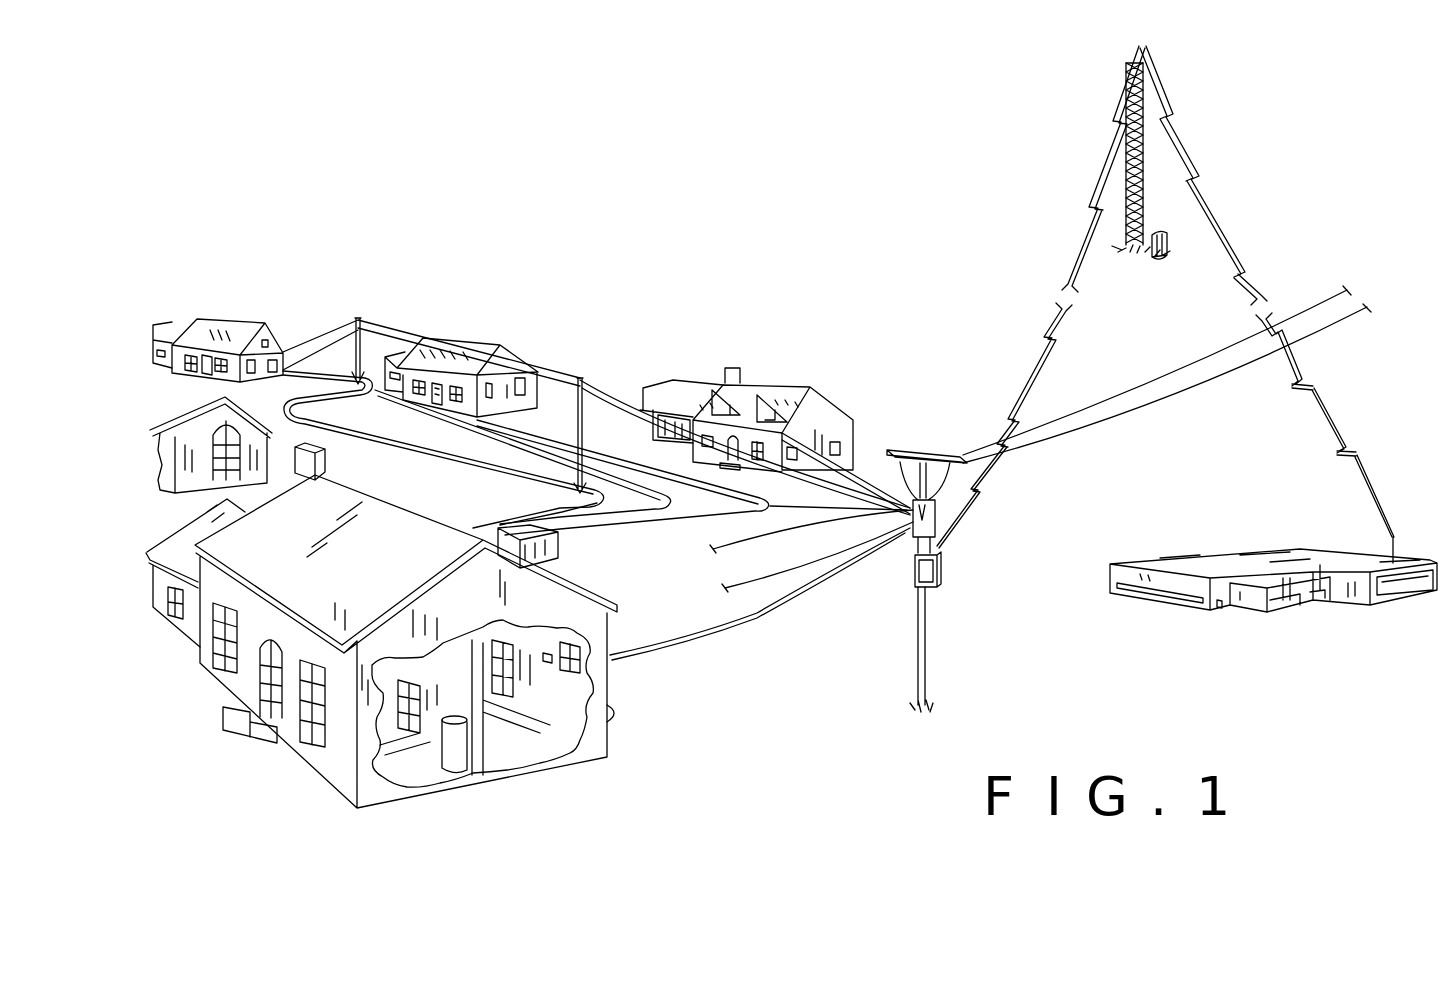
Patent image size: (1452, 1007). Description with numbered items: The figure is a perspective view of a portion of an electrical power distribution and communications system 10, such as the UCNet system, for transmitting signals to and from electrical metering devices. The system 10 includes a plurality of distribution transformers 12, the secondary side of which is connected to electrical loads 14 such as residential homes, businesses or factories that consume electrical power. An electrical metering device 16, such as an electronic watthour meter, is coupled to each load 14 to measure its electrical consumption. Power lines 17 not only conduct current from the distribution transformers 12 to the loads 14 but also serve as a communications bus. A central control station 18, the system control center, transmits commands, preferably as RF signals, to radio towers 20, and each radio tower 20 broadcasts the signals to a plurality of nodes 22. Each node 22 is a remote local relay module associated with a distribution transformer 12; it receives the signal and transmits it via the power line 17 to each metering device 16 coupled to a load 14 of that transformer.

The electrical power distribution and communications system 10 is at (1290, 203).
The distribution transformer 12 is at (913, 515).
The electrical load 14 is at (513, 317).
The electrical metering device 16 is at (810, 435).
The electrical power line 17 is at (582, 386).
The central control station 18 is at (1233, 560).
The radio tower 20 is at (1143, 192).
The node 22 is at (940, 567).